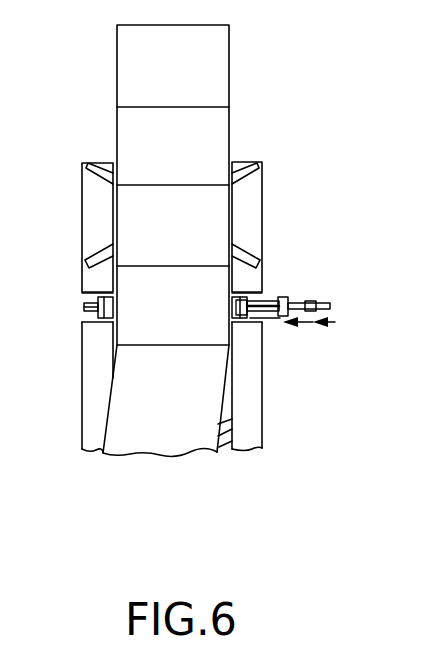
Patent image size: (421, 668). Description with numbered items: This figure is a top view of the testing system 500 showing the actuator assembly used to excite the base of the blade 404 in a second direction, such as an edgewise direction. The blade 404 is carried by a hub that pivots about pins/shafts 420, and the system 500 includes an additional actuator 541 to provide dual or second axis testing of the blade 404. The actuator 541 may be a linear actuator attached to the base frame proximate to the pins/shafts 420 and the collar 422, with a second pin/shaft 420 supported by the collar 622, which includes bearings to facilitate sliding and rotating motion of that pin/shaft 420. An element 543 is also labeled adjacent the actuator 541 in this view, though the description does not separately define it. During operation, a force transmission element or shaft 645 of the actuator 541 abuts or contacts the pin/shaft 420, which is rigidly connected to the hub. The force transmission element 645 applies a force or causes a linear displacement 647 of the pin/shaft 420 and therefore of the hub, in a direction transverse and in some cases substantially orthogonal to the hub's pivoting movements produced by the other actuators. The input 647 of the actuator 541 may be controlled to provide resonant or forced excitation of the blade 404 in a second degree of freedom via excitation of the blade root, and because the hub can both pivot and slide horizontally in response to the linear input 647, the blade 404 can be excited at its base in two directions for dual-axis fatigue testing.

The testing system 500 is at (61, 195).
The pin/shaft 420 is at (73, 308).
The collar 422 is at (245, 294).
The bolt 543 is at (270, 300).
The actuator 541 is at (300, 305).
The collar 622 is at (86, 326).
The force transmission element 645 is at (265, 322).
The linear displacement 647 is at (305, 322).
The blade 404 is at (186, 440).